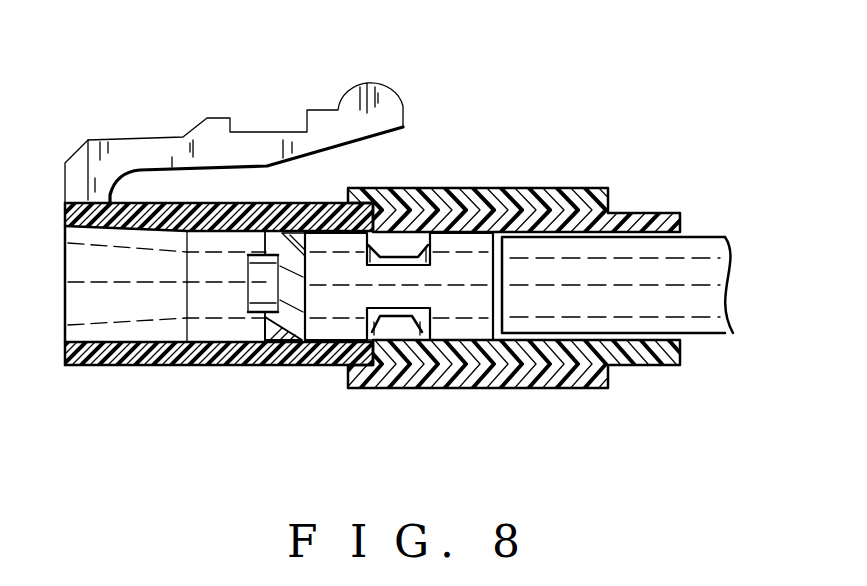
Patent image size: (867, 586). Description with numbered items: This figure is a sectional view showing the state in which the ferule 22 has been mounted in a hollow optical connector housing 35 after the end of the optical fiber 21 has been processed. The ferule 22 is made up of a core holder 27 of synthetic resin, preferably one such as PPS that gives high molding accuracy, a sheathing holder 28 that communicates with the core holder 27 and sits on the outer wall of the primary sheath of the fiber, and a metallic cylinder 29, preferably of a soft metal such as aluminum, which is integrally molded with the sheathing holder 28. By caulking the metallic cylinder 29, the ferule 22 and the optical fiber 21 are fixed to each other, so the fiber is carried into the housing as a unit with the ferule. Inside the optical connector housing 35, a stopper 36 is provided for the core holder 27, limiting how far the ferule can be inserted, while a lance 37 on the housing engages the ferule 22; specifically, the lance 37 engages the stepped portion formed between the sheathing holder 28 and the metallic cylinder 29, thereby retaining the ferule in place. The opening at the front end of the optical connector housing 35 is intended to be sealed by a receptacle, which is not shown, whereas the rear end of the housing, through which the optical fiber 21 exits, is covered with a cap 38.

The optical fiber 21 is at (705, 236).
The ferule 22 is at (283, 237).
The core holder 27 is at (330, 315).
The sheathing holder 28 is at (382, 387).
The cylinder 29 is at (413, 317).
The optical connector housing 35 is at (193, 367).
The stopper 36 is at (257, 335).
The lance 37 is at (390, 232).
The cap 38 is at (583, 390).